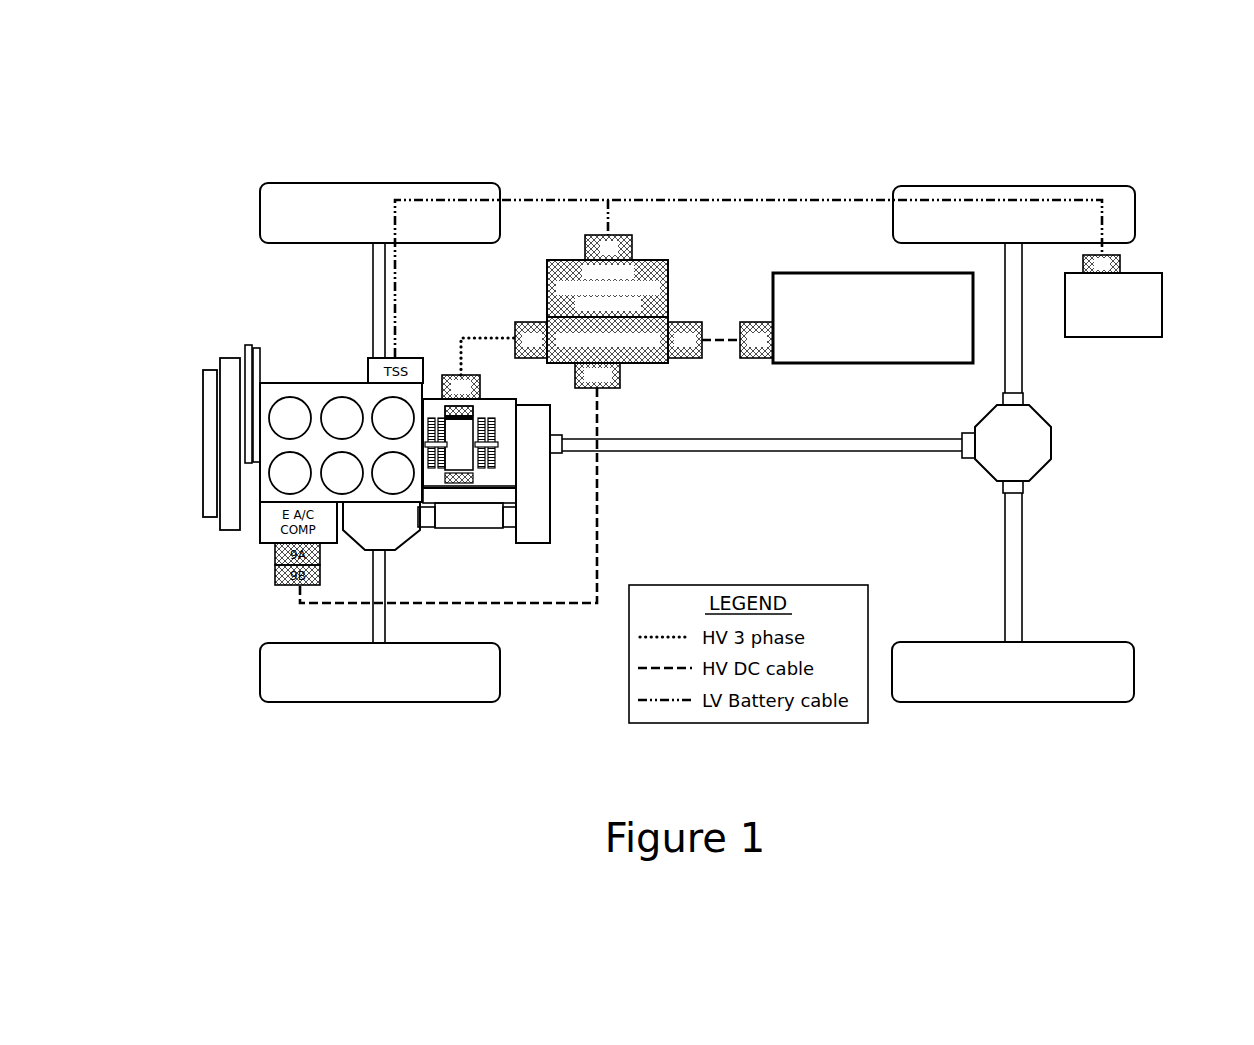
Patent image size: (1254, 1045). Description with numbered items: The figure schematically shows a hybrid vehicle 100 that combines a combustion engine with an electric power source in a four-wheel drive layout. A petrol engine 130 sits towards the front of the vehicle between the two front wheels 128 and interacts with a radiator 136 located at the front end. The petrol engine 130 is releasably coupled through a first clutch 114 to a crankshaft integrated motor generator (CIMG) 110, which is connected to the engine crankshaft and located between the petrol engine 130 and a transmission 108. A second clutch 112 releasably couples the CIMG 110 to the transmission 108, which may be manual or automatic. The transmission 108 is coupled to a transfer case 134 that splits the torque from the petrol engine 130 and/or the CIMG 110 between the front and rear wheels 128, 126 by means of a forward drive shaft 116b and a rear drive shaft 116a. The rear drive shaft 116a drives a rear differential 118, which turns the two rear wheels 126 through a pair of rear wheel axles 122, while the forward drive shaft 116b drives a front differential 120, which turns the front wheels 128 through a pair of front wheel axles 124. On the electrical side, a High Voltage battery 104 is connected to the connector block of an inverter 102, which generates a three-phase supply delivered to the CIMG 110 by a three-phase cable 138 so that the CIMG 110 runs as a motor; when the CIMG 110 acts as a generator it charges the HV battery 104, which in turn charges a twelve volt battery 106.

The hybrid vehicle 100 is at (1065, 157).
The inverter 102 is at (655, 265).
The High Voltage (HV) battery 104 is at (820, 285).
The 12 Volt battery 106 is at (1150, 283).
The transmission 108 is at (493, 405).
The crankshaft integrated motor generator (CIMG) 110 is at (453, 407).
The second clutch 112 is at (490, 467).
The first clutch 114 is at (432, 463).
The rear drive shaft 116a is at (838, 450).
The forward drive shaft 116b is at (462, 517).
The rear differential 118 is at (1033, 443).
The front differential 120 is at (362, 527).
The rear wheel axles 122 is at (1013, 365).
The front wheel axles 124 is at (378, 293).
The rear wheels 126 is at (1125, 202).
The front wheels 128 is at (278, 203).
The petrol engine 130 is at (310, 395).
The transfer case 134 is at (532, 533).
The radiator 136 is at (230, 392).
The three-phase cable 138 is at (470, 337).